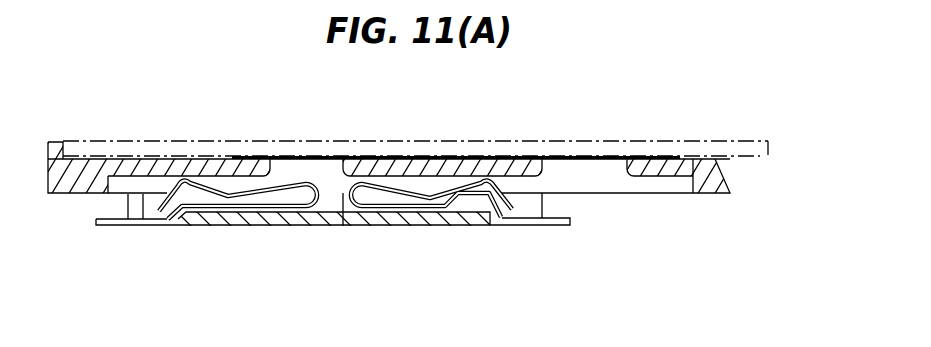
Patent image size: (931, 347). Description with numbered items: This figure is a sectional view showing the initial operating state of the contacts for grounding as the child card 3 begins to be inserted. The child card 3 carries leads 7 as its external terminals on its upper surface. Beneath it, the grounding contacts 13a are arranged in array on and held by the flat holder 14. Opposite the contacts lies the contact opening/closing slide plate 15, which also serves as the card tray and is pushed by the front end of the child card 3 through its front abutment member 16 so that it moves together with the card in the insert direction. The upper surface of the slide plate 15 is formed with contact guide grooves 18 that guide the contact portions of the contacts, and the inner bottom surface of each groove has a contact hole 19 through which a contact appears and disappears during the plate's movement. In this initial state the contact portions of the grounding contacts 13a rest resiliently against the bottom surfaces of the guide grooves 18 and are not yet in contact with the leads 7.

The child card 3 is at (673, 142).
The leads 7 is at (301, 157).
The grounding contacts 13a is at (228, 197).
The holder 14 is at (377, 221).
The contact opening/closing slide plate 15 is at (78, 185).
The front abutment member 16 is at (57, 141).
The contact guide grooves 18 is at (143, 183).
The contact hole 19 is at (329, 177).